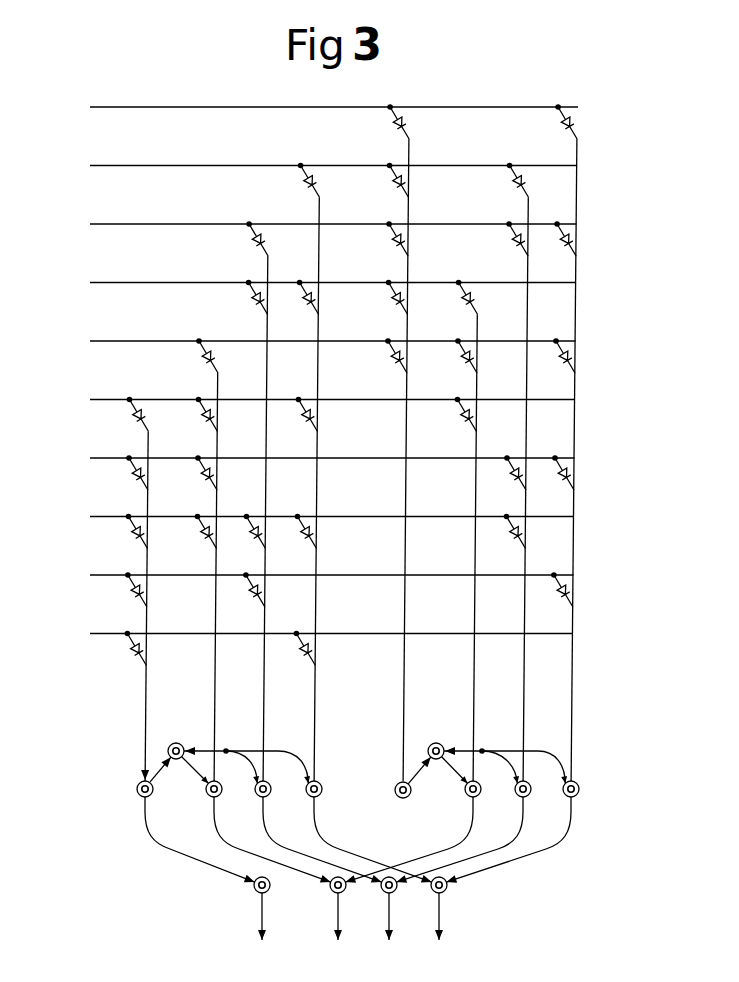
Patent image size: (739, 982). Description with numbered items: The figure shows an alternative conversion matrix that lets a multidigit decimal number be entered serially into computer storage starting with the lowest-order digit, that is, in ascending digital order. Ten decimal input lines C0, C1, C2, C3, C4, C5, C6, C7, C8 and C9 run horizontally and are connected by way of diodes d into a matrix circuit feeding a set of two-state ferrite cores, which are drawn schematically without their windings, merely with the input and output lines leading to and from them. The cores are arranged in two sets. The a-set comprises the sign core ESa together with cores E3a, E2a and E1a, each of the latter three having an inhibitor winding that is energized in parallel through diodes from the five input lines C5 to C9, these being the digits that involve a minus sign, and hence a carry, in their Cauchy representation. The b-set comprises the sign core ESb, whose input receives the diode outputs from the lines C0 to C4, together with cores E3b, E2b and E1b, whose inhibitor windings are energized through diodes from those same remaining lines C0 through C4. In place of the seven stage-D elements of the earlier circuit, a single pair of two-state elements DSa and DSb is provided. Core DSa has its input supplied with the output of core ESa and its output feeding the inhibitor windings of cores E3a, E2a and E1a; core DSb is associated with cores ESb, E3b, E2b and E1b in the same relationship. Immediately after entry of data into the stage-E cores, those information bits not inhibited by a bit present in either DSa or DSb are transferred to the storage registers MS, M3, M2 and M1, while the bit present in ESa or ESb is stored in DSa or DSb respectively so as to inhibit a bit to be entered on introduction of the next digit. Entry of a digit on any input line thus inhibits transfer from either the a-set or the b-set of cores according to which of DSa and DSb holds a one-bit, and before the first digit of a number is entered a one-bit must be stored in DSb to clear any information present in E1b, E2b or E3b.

The input line C0 is at (314, 108).
The input line C1 is at (313, 167).
The input line C2 is at (313, 225).
The input line C3 is at (313, 284).
The input line C4 is at (313, 342).
The input line C5 is at (312, 401).
The input line C6 is at (312, 459).
The input line C7 is at (312, 518).
The input line C8 is at (312, 576).
The input line C9 is at (311, 635).
The diode d is at (392, 117).
The core ESa is at (137, 787).
The core E3a is at (208, 796).
The core E2a is at (260, 797).
The core E1a is at (308, 796).
The core ESb is at (397, 797).
The core E3b is at (468, 797).
The core E2b is at (520, 797).
The core E1b is at (567, 797).
The core DSa is at (176, 743).
The core DSb is at (443, 700).
The M storage register MS is at (262, 927).
The M storage register M3 is at (339, 927).
The M storage register M2 is at (390, 927).
The M storage register M1 is at (440, 927).